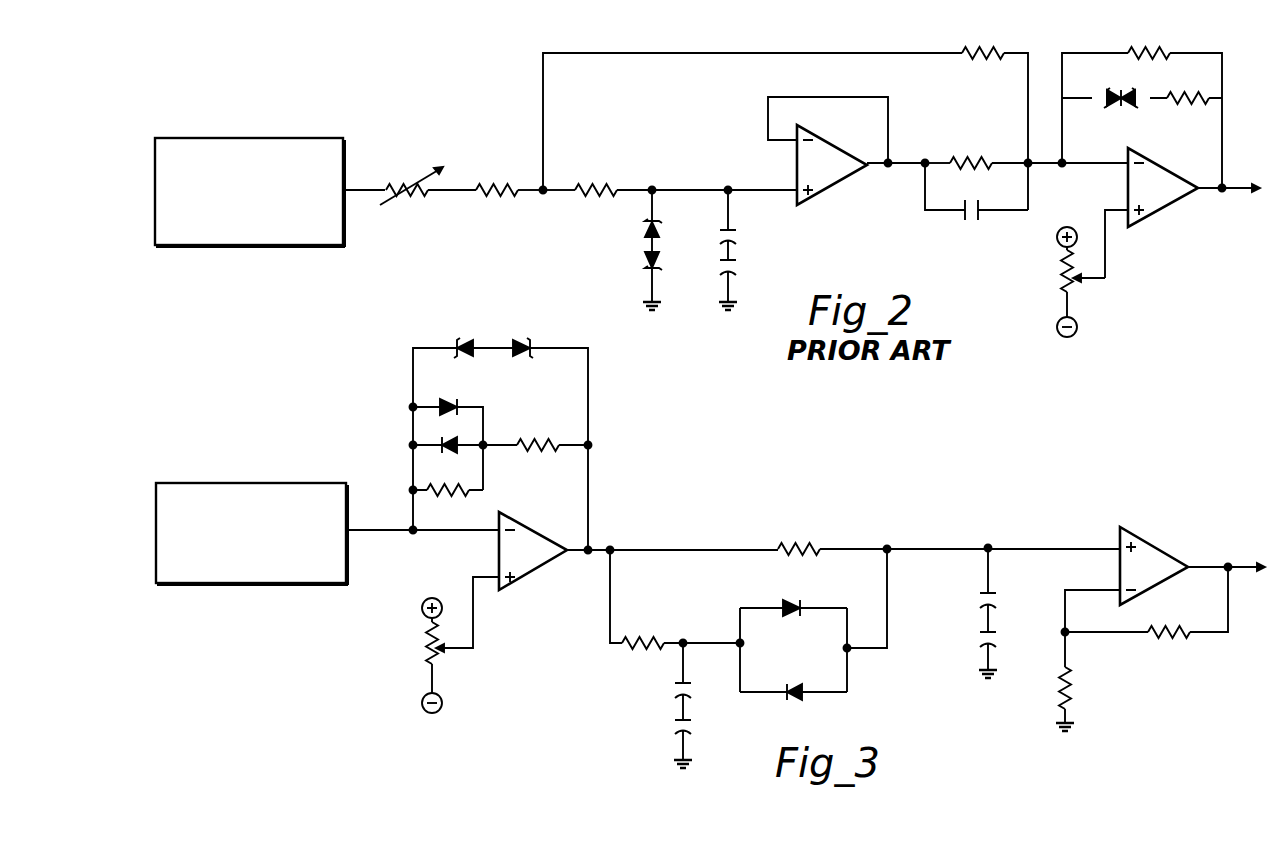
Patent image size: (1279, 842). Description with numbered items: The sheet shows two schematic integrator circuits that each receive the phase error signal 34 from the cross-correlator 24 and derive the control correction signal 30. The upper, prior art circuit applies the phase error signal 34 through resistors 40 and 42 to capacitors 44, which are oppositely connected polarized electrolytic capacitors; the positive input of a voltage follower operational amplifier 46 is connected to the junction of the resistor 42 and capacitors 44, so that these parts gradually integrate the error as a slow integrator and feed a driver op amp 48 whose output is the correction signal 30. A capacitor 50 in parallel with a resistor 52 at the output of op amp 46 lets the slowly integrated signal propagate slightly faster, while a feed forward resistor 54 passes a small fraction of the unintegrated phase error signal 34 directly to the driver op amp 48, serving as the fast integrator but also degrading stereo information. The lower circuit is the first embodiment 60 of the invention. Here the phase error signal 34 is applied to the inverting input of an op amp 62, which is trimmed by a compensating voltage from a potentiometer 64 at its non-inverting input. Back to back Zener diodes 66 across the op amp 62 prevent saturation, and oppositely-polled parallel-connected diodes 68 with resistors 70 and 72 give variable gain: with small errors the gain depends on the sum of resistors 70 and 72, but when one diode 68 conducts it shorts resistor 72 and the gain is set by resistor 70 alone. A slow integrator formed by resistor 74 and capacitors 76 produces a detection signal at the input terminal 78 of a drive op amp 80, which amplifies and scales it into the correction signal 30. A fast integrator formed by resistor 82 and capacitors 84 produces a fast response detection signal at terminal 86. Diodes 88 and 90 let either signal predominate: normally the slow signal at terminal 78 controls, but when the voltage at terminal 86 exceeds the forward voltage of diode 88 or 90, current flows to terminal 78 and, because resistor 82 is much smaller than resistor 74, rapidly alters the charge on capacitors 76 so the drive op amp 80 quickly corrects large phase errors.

In FIG. 2, the cross-correlator 24 is at (278, 138).
In FIG. 3, the cross-correlator 24 is at (290, 583).
In FIG. 2, the control correction signal 30 is at (1239, 191).
In FIG. 3, the control correction signal 30 is at (1233, 566).
In FIG. 2, the phase error signal 34 is at (362, 190).
In FIG. 3, the phase error signal 34 is at (362, 530).
In FIG. 2, the resistor 40 is at (527, 207).
In FIG. 2, the resistor 42 is at (592, 190).
In FIG. 2, the capacitors 44 is at (748, 210).
In FIG. 2, the voltage follower operational amplifier 46 is at (830, 188).
In FIG. 2, the driver op amp 48 is at (1167, 204).
In FIG. 2, the capacitor 50 is at (983, 213).
In FIG. 2, the resistor 52 is at (975, 163).
In FIG. 2, the feed forward resistor 54 is at (986, 58).
In FIG. 3, the circuit embodiment 60 is at (802, 443).
In FIG. 3, the op amp 62 is at (531, 568).
In FIG. 3, the potentiometer 64 is at (430, 650).
In FIG. 3, the Zener diodes 66 is at (547, 327).
In FIG. 3, the diodes 68 is at (445, 438).
In FIG. 3, the resistor 70 is at (534, 443).
In FIG. 3, the resistor 72 is at (466, 488).
In FIG. 3, the resistor 74 is at (796, 548).
In FIG. 3, the capacitors 76 is at (1003, 582).
In FIG. 3, the input terminal 78 is at (988, 545).
In FIG. 3, the drive op amp 80 is at (1150, 550).
In FIG. 3, the resistor 82 is at (644, 642).
In FIG. 3, the capacitors 84 is at (667, 670).
In FIG. 3, the terminal 86 is at (685, 642).
In FIG. 3, the diode 88 is at (789, 689).
In FIG. 3, the diode 90 is at (790, 607).